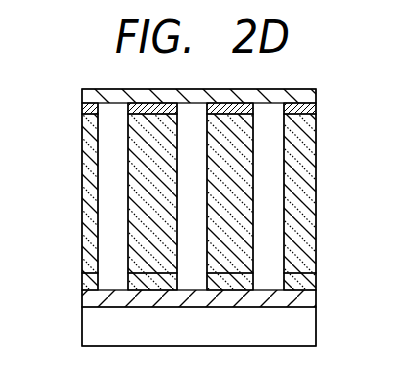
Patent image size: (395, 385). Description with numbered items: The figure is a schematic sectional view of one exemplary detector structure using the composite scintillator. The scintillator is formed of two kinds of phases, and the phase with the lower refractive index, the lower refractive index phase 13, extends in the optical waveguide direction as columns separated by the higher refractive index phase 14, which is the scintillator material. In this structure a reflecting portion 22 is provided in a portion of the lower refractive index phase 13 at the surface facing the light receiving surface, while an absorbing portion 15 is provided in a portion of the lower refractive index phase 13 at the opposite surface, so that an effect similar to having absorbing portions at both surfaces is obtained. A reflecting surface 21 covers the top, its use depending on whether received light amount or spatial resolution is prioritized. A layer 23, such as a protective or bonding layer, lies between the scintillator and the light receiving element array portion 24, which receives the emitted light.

The lower refractive index phase 13 is at (310, 145).
The pillar body material 14 is at (275, 196).
The absorbing portion 15 is at (86, 112).
The reflecting surface 21 is at (85, 98).
The reflecting portion 22 is at (90, 282).
The layer 23 is at (92, 300).
The light receiving element array portion 24 is at (92, 328).